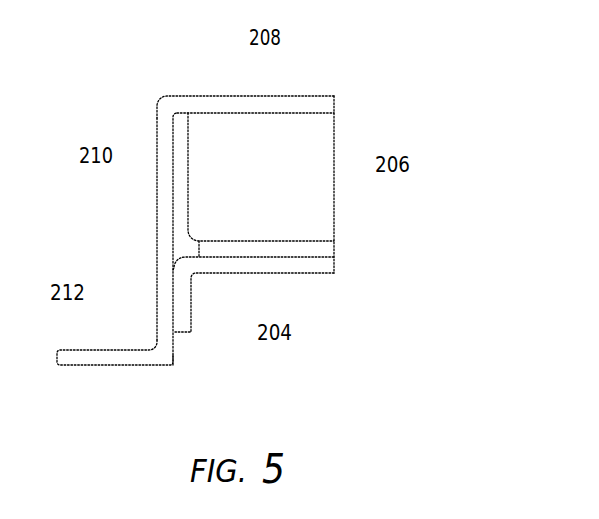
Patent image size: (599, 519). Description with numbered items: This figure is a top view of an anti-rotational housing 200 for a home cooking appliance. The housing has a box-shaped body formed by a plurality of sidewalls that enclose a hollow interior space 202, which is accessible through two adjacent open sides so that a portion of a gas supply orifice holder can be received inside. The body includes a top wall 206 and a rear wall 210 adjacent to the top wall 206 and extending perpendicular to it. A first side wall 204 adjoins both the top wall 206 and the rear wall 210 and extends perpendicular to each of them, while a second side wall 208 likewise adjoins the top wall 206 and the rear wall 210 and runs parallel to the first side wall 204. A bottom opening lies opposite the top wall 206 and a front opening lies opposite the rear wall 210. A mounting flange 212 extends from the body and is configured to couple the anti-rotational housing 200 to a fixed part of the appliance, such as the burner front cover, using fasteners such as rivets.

The anti-rotational housing 200 is at (271, 240).
The hollow interior space 202 is at (271, 210).
The first side wall 204 is at (276, 308).
The top wall 206 is at (325, 178).
The second side wall 208 is at (255, 96).
The rear wall 210 is at (157, 181).
The mounting flange 212 is at (115, 336).